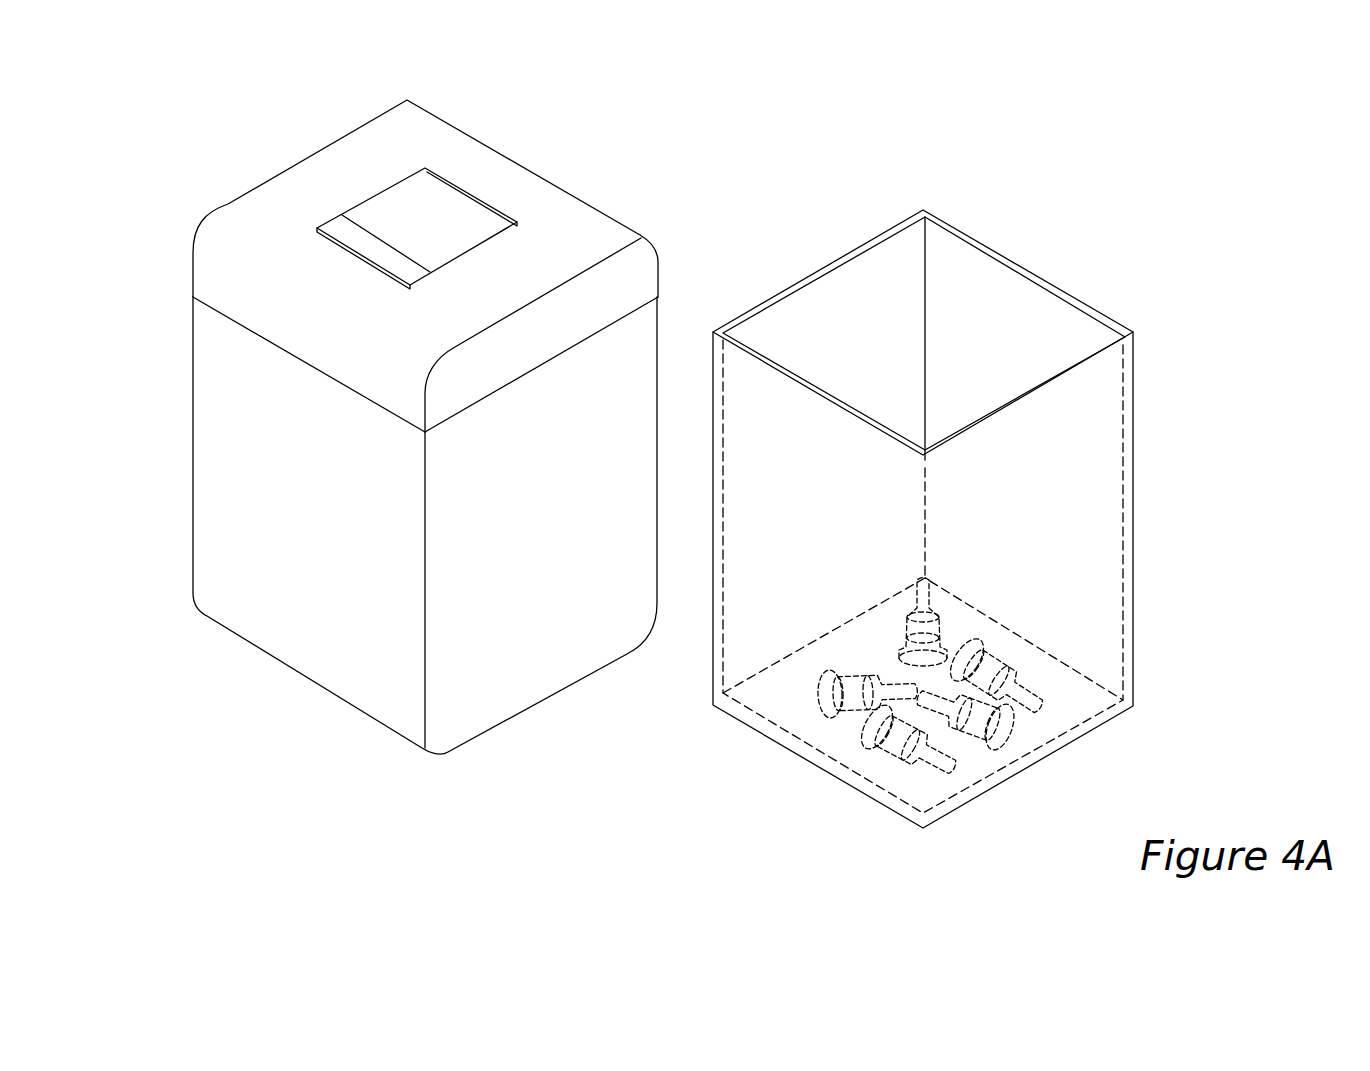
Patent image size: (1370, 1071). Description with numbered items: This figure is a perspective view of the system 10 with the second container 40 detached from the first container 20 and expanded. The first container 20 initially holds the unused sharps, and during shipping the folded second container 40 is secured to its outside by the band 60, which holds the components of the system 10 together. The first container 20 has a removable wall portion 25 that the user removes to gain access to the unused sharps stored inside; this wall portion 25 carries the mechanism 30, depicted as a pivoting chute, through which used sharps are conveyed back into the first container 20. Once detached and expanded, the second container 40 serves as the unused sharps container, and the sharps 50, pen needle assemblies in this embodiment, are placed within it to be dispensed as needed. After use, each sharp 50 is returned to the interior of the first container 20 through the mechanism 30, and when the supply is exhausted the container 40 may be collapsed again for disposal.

The system 10 is at (229, 94).
The first container 20 is at (208, 325).
The removable wall portion 25 is at (215, 237).
The mechanism 30 is at (445, 209).
The second container 40 is at (1093, 432).
The used sharp 50 is at (1002, 723).
The band 60 is at (218, 437).